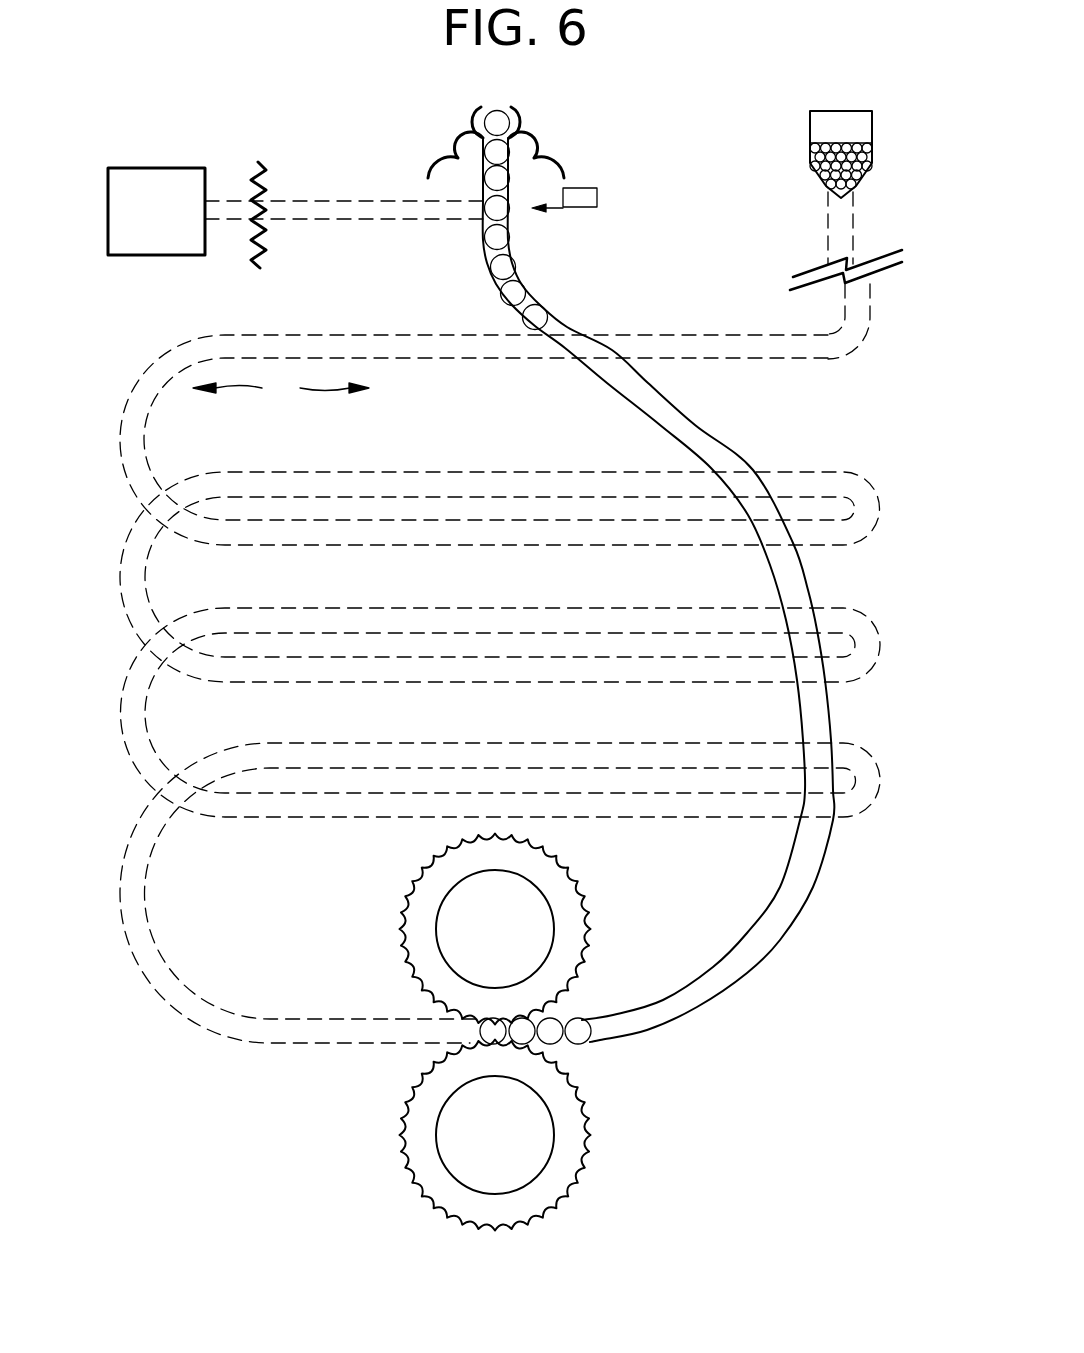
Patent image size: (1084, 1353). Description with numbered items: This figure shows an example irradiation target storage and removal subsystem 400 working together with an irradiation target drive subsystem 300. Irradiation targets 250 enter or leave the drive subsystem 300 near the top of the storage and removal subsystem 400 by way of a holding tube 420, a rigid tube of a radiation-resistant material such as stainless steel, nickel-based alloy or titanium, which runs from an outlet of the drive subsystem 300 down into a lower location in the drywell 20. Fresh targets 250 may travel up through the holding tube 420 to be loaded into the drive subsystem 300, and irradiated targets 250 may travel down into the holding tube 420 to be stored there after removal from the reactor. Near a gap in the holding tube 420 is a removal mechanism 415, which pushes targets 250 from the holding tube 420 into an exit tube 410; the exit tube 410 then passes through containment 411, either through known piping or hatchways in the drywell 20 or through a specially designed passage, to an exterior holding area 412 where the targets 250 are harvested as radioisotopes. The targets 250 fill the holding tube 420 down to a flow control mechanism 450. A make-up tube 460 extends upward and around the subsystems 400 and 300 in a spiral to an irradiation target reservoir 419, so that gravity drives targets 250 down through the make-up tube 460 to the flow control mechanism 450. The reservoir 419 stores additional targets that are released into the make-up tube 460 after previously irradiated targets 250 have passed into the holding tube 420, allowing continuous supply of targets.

The drywell 20 is at (281, 388).
The irradiation targets 250 is at (523, 322).
The irradiation target drive subsystem 300 is at (600, 103).
The irradiation target storage and removal subsystem 400 is at (755, 1004).
The exit tube 410 is at (357, 222).
The containment 411 is at (262, 178).
The exterior holding area 412 is at (148, 258).
The removal mechanism 415 is at (588, 209).
The irradiation target reservoir 419 is at (868, 170).
The holding tube 420 is at (571, 332).
The flow control mechanism 450 is at (592, 1230).
The make-up tube 460 is at (183, 1020).